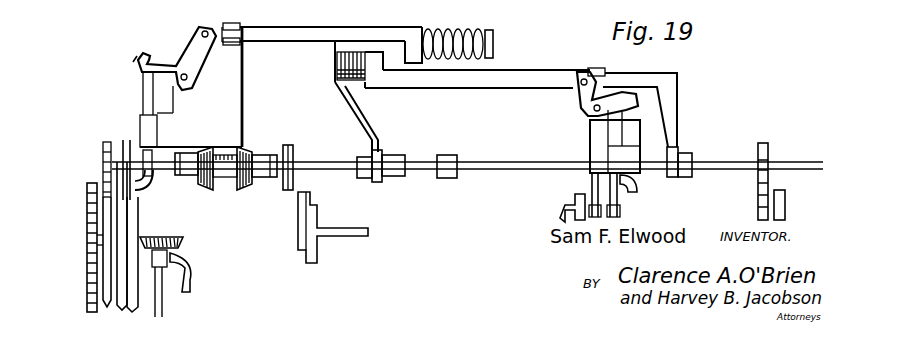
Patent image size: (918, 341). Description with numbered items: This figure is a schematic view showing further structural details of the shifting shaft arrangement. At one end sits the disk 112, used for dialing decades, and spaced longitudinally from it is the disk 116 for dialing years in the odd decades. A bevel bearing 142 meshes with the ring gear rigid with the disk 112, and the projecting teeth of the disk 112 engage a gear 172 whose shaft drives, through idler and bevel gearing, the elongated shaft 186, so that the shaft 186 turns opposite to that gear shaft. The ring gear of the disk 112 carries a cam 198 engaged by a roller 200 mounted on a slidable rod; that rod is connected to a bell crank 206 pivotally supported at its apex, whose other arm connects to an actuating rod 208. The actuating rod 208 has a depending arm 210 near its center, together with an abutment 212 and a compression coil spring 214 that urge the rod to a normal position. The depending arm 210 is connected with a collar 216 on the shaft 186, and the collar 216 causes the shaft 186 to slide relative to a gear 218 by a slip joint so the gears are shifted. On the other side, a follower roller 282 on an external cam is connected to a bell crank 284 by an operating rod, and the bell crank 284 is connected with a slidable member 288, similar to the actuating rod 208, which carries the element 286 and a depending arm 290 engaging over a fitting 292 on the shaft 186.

The disk 112 is at (110, 200).
The disk 116 is at (306, 246).
The bevel bearing 142 is at (183, 240).
The gear 172 is at (108, 141).
The elongated shaft 186 is at (507, 170).
The cam 198 is at (128, 211).
The roller 200 is at (126, 175).
The bell crank 206 is at (193, 53).
The actuating rod 208 is at (282, 34).
The depending arm 210 is at (356, 118).
The abutment 212 is at (415, 42).
The compression coil spring 214 is at (462, 30).
The collar 216 is at (395, 172).
The gear 218 is at (294, 146).
The follower roller 282 is at (620, 193).
The bell crank 284 is at (579, 106).
The block 286 is at (628, 132).
The slidable member 288 is at (536, 76).
The depending arm 290 is at (670, 117).
The fitting 292 is at (684, 156).